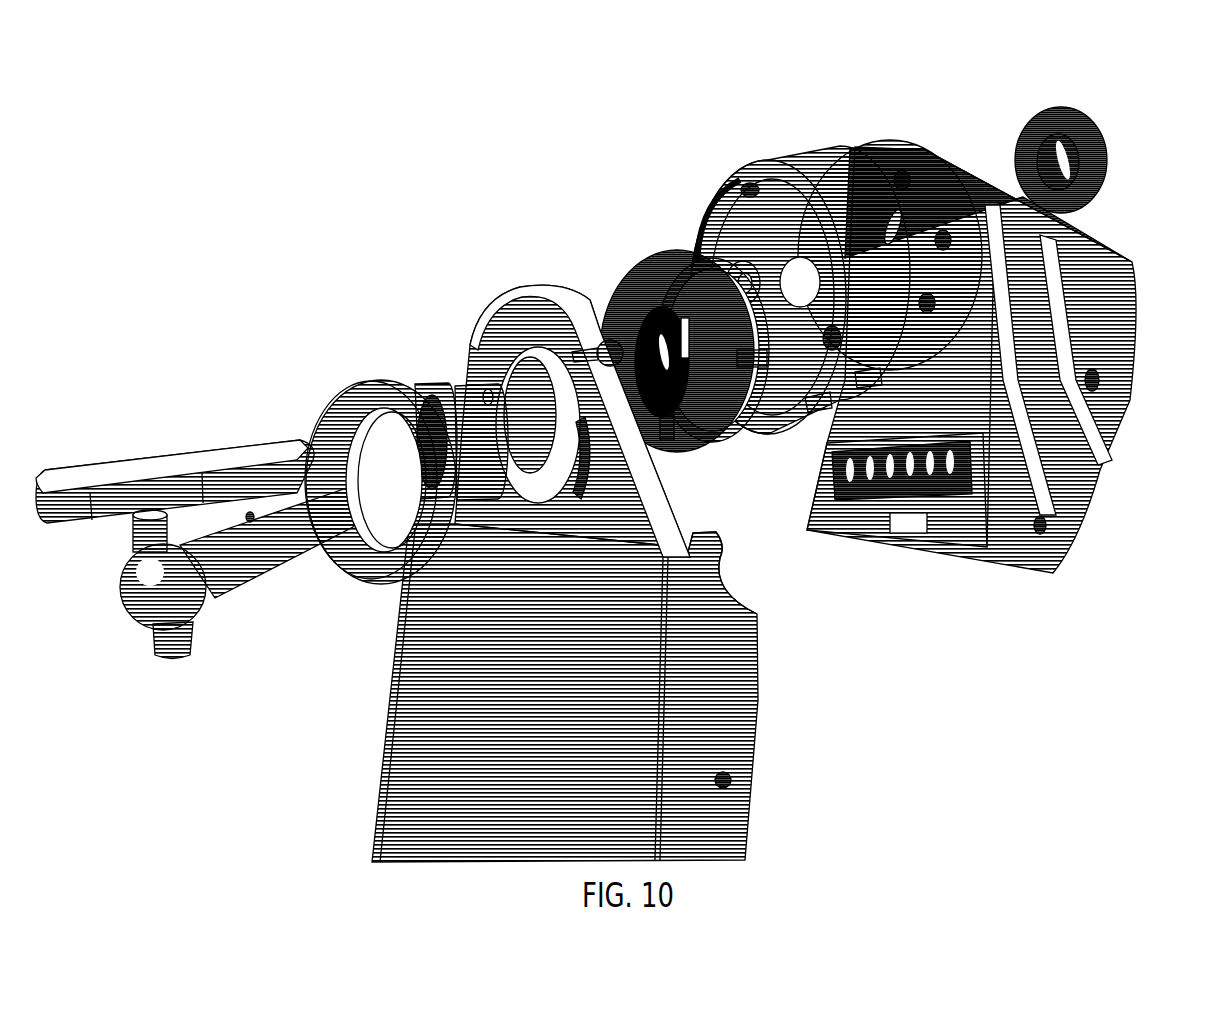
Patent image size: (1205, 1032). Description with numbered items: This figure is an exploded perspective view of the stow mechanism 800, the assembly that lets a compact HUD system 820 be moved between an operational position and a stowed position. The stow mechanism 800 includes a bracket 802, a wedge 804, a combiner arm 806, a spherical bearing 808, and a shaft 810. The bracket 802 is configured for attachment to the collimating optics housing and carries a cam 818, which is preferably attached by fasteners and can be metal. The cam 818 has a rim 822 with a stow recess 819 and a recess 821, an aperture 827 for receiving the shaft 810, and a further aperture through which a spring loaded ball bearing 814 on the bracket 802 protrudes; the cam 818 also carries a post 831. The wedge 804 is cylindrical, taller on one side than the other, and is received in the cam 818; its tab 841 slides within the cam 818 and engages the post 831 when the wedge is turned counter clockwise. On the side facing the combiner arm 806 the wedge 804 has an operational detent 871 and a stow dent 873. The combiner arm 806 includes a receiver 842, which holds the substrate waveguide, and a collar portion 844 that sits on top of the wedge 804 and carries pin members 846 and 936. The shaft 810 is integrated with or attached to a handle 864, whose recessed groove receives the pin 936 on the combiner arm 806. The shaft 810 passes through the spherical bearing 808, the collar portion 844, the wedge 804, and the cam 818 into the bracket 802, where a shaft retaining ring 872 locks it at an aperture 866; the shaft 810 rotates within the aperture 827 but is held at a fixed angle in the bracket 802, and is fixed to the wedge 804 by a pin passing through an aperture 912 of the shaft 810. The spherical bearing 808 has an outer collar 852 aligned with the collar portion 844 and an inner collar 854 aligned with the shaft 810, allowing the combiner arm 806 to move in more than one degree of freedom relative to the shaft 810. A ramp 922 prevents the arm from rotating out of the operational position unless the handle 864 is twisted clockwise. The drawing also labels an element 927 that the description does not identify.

The stow mechanism 800 is at (928, 72).
The bracket 802 is at (1104, 478).
The wedge 804 is at (620, 270).
The combiner arm 806 is at (717, 573).
The spherical bearing 808 is at (470, 395).
The shaft 810 is at (253, 560).
The spring loaded ball bearing 814 is at (950, 234).
The cam 818 is at (797, 165).
The stow recess 819 is at (867, 380).
The compact HUD system 820 is at (852, 706).
The recess 821 is at (713, 195).
The rim 822 is at (817, 250).
The aperture 827 is at (783, 267).
The post 831 is at (748, 185).
The tab 841 is at (734, 433).
The combiner receiver 842 is at (410, 718).
The collar portion 844 is at (540, 298).
The pin member 846 is at (600, 340).
The outer collar 852 is at (440, 400).
The inner collar 854 is at (423, 413).
The handle 864 is at (121, 467).
The aperture 866 is at (303, 492).
The operational detent 871 is at (667, 437).
The shaft retaining ring 872 is at (1108, 152).
The stow dent 873 is at (687, 337).
The aperture 912 is at (250, 517).
The ramp 922 is at (752, 420).
The flange 927 is at (822, 403).
The pin 936 is at (487, 397).